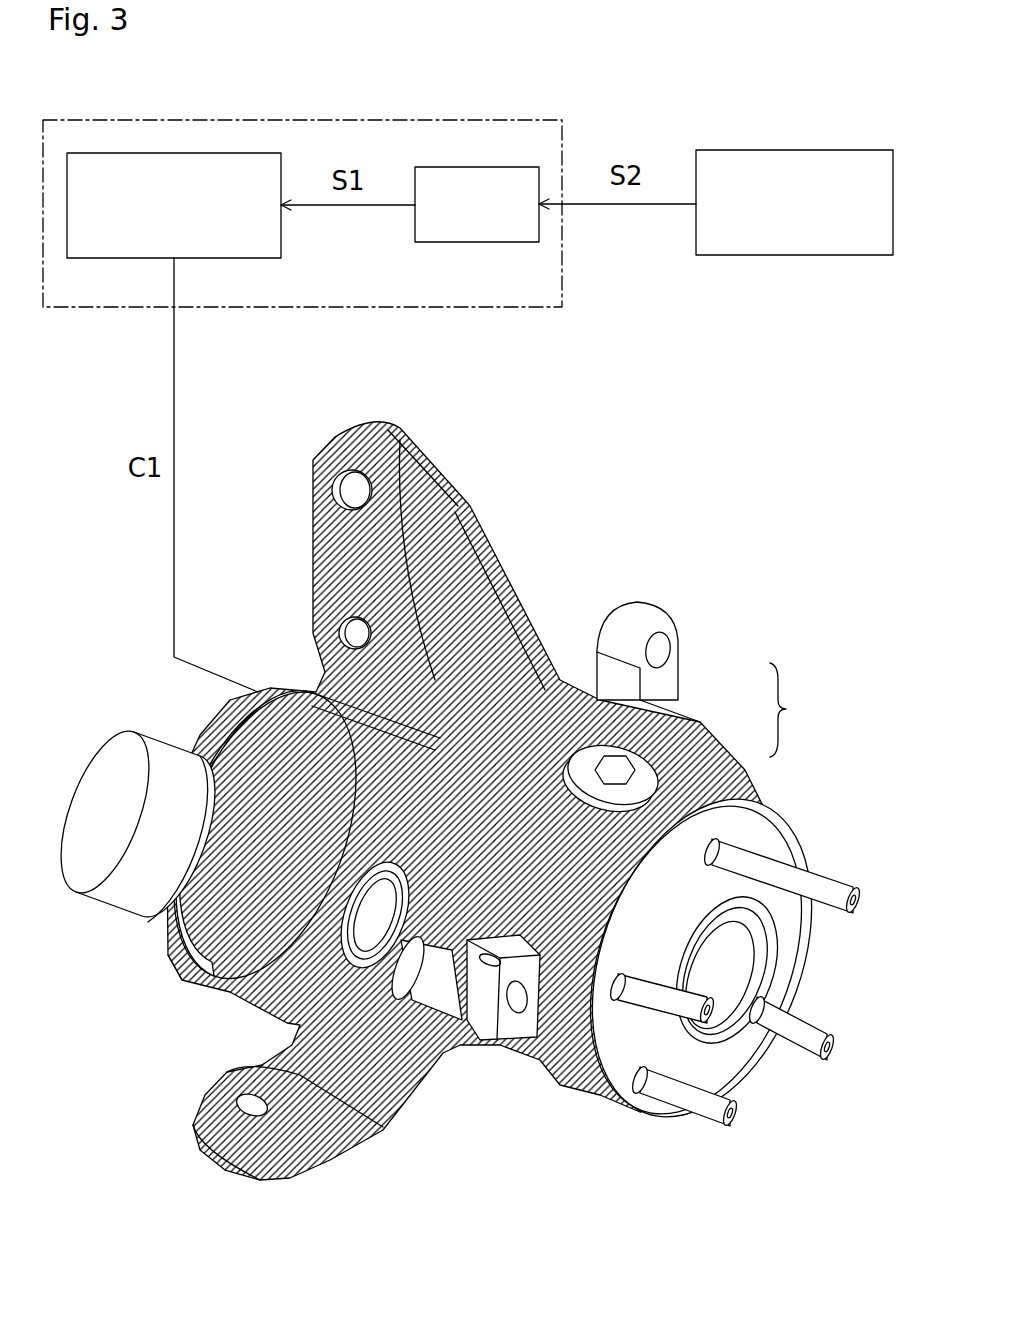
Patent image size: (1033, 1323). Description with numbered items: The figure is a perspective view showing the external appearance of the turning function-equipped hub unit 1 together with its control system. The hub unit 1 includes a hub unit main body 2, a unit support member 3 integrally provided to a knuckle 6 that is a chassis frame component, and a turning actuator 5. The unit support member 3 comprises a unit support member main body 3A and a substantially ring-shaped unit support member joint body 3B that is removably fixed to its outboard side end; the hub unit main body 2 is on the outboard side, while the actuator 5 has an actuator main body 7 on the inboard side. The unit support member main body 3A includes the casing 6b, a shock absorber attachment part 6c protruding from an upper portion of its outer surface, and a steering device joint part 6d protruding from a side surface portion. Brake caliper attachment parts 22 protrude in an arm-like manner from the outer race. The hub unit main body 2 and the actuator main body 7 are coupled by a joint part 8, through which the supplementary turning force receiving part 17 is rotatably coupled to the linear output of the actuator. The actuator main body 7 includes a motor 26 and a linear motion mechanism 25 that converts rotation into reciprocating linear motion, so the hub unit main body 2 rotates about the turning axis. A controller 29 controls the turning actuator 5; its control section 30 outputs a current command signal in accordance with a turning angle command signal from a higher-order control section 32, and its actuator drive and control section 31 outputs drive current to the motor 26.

The turning function-equipped hub unit 1 is at (665, 530).
The hub unit main body 2 is at (790, 807).
The unit support member 3 is at (788, 710).
The unit support member main body 3A is at (633, 697).
The unit support member joint body 3B is at (703, 793).
The turning actuator 5 is at (135, 933).
The knuckle 6 is at (453, 463).
The casing 6b is at (228, 967).
The shock absorber attachment part 6c is at (340, 533).
The steering device joint part 6d is at (238, 1167).
The actuator main body 7 is at (163, 707).
The joint part 8 is at (424, 990).
The supplementary turning force receiving part 17 is at (478, 1017).
The brake caliper attachment part 22 is at (642, 620).
The linear motion mechanism 25 is at (83, 760).
The motor 26 is at (272, 678).
The controller 29 is at (317, 307).
The control section 30 is at (482, 167).
The actuator drive and control section 31 is at (183, 153).
The higher-order control section 32 is at (807, 255).